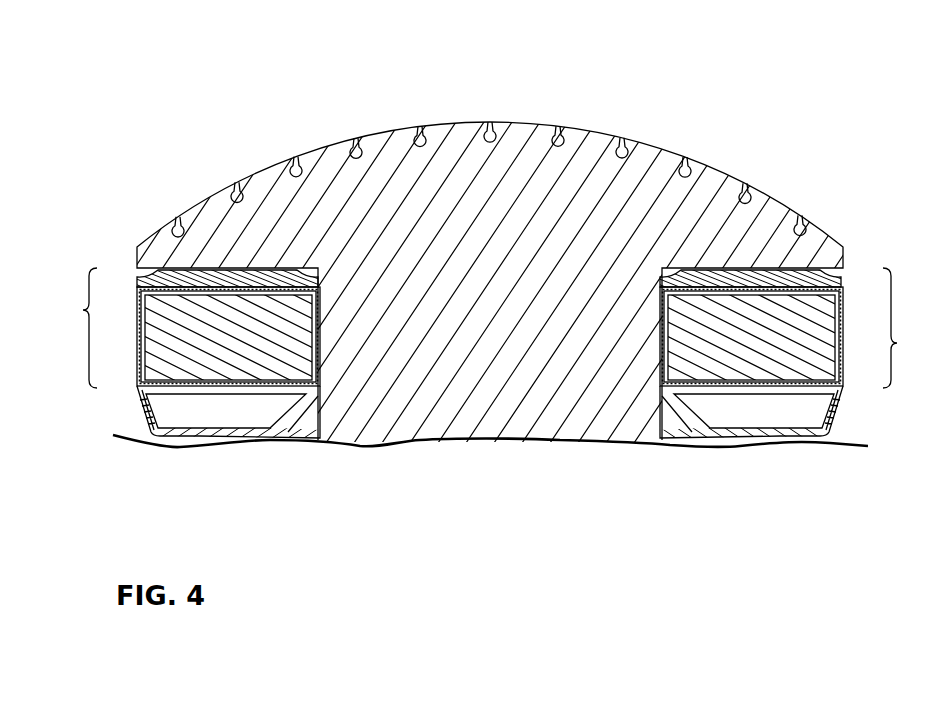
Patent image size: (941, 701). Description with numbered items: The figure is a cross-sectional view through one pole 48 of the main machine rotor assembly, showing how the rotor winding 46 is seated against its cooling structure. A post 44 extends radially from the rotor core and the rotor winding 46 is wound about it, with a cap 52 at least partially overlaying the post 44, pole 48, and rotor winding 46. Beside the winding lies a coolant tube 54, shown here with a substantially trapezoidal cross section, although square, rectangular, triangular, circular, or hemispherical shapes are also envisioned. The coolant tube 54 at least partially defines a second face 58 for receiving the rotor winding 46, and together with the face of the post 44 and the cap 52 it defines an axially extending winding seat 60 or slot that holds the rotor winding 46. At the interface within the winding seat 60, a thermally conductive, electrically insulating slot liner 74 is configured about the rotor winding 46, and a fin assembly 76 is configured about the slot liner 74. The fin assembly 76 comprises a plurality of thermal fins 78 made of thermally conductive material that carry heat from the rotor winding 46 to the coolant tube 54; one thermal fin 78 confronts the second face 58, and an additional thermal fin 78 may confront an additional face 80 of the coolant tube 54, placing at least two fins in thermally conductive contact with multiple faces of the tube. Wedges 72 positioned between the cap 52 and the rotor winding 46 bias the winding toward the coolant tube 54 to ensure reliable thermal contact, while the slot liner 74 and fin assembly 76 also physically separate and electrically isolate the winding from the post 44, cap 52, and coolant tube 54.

The post 44 is at (470, 347).
The rotor winding 46 is at (293, 310).
The pole 48 is at (470, 275).
The cap 52 is at (600, 165).
The coolant tube 54 is at (152, 430).
The second face 58 is at (241, 399).
The winding seat 60 is at (486, 326).
The wedge 72 is at (168, 280).
The slot liner 74 is at (317, 383).
The fin assembly 76 is at (136, 322).
The thermal fin 78 is at (137, 300).
The additional face 80 is at (153, 409).